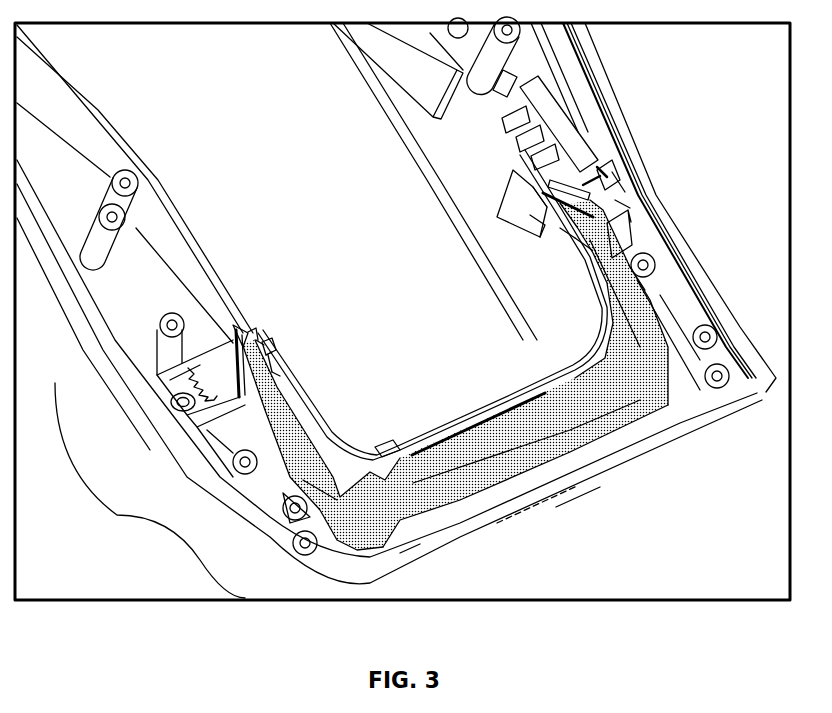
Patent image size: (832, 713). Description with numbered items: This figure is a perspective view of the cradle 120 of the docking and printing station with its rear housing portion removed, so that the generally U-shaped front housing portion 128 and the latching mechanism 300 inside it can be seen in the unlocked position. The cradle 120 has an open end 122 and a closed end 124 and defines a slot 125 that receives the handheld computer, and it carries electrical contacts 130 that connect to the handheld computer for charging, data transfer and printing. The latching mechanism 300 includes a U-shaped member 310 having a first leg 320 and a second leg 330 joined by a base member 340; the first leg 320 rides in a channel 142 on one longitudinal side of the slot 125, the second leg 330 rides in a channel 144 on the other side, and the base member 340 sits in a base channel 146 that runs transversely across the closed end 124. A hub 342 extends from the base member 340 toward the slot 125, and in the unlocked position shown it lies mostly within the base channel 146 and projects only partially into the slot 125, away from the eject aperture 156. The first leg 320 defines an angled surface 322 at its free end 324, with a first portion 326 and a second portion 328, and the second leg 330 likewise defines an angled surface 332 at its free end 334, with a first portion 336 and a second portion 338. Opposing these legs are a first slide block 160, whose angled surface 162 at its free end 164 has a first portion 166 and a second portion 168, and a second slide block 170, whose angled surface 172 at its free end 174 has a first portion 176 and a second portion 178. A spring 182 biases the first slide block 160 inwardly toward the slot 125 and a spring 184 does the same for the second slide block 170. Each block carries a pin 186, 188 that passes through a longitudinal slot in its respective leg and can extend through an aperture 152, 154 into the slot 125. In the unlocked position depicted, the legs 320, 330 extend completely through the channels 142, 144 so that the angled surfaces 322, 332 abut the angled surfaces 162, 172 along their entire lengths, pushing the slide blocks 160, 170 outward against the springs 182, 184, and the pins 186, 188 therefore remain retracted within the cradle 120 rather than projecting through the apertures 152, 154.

The cradle 120 is at (268, 550).
The open end 122 is at (62, 96).
The closed end 124 is at (743, 333).
The slot 125 is at (239, 108).
The front housing portion 128 is at (572, 102).
The electrical contacts 130 is at (383, 442).
The channel 142 is at (302, 444).
The channel 144 is at (618, 237).
The base channel 146 is at (458, 525).
The aperture 152 is at (274, 352).
The aperture 154 is at (548, 228).
The eject aperture 156 is at (560, 507).
The first slide block 160 is at (218, 437).
The angled surface 162 is at (232, 368).
The free end 164 is at (233, 330).
The first portion 166 is at (232, 358).
The second portion 168 is at (172, 399).
The second slide block 170 is at (622, 178).
The angled surface 172 is at (608, 182).
The free end 174 is at (577, 193).
The first portion 176 is at (590, 200).
The second portion 178 is at (645, 185).
The spring 182 is at (180, 412).
The spring 184 is at (634, 170).
The pin 186 is at (270, 350).
The pin 188 is at (560, 228).
The latching mechanism 300 is at (150, 490).
The U-shaped member 310 is at (437, 532).
The first leg 320 is at (305, 450).
The angled surface 322 is at (272, 365).
The free end 324 is at (250, 337).
The first portion 326 is at (263, 340).
The second portion 328 is at (270, 375).
The second leg 330 is at (625, 285).
The angled surface 332 is at (580, 240).
The free end 334 is at (578, 213).
The first portion 336 is at (583, 203).
The second portion 338 is at (600, 250).
The base member 340 is at (500, 505).
The hub 342 is at (478, 420).